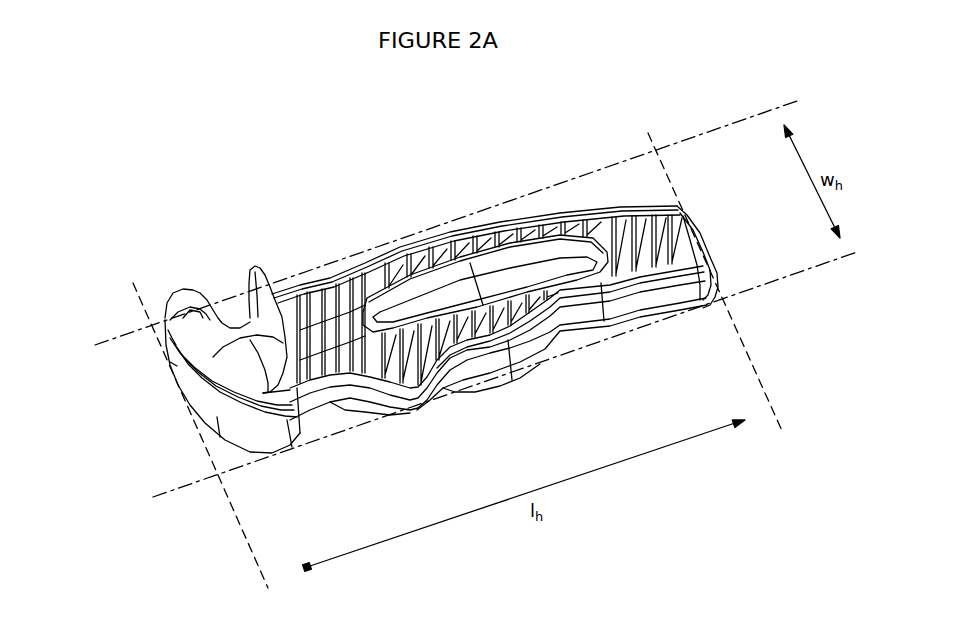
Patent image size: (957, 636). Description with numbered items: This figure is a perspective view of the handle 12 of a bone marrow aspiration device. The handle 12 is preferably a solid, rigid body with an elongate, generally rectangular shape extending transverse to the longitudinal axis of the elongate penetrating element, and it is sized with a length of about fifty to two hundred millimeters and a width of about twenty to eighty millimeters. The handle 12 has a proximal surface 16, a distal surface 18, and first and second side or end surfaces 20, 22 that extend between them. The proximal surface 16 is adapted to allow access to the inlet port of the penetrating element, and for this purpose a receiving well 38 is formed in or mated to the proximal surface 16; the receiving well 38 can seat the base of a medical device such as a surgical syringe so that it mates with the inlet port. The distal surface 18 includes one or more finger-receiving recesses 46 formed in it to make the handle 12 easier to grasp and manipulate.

The handle 12 is at (106, 153).
The proximal surface 16 is at (418, 219).
The distal surface 18 is at (611, 351).
The first side or end surface 20 is at (163, 425).
The second side or end surface 22 is at (719, 224).
The receiving well 38 is at (219, 325).
The finger-receiving recesses 46 is at (347, 393).